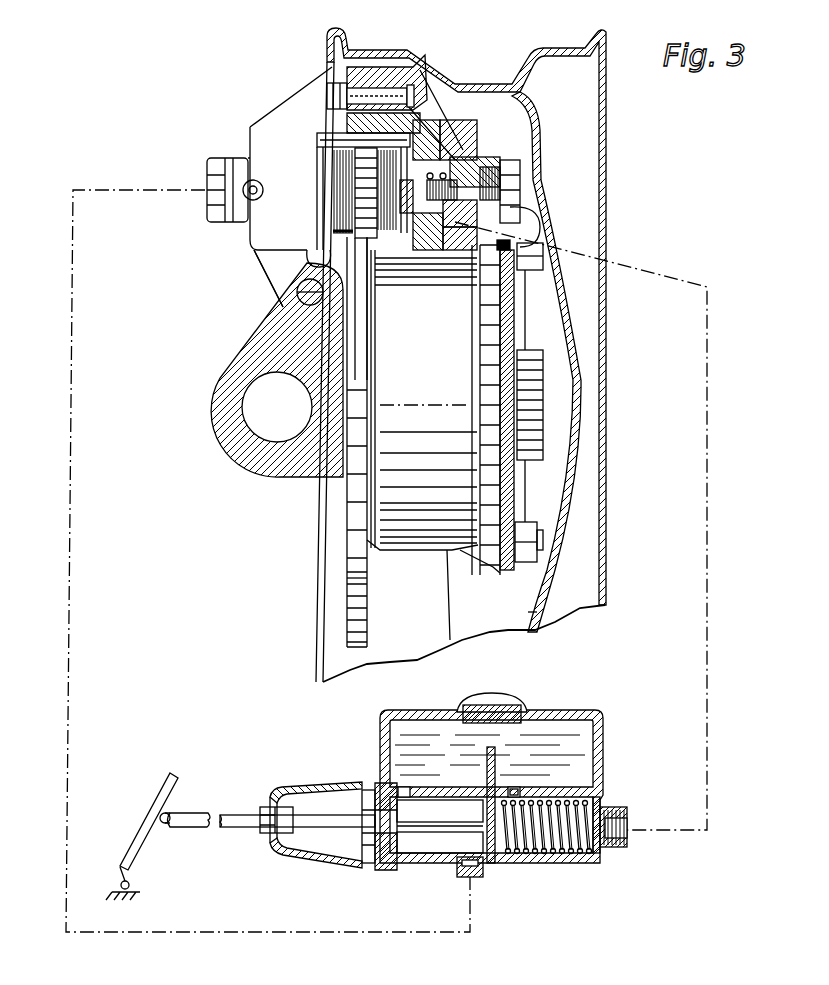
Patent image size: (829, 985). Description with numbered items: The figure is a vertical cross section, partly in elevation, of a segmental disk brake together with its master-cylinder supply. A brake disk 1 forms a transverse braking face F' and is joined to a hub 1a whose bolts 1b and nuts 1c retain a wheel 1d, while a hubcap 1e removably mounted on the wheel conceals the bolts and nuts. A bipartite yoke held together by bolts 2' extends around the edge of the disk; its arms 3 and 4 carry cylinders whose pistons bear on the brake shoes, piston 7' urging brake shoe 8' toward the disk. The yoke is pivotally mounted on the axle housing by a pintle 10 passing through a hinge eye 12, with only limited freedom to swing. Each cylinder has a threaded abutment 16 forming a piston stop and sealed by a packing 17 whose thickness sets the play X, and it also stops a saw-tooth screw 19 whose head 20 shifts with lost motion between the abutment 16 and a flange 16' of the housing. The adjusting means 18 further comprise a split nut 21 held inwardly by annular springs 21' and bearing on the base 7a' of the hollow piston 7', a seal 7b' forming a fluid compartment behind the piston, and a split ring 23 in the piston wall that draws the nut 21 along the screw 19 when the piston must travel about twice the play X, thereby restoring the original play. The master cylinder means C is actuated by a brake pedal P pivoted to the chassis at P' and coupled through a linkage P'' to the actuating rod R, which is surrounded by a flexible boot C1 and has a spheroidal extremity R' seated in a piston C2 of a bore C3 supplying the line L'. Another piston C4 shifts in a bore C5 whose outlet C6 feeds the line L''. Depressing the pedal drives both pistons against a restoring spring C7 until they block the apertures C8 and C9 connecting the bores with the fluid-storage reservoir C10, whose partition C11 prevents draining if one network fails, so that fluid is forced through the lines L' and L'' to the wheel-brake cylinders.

The brake disk 1 is at (349, 530).
The hub 1a is at (447, 547).
The bolts 1b is at (540, 550).
The nuts 1c is at (523, 530).
The wheel 1d is at (533, 613).
The hubcap 1e is at (573, 437).
The bolts 2' is at (370, 61).
The arm of the yoke 3 is at (418, 98).
The arm of the yoke 4 is at (305, 98).
The piston 7' is at (443, 294).
The base of the hollow piston 7a' is at (335, 264).
The seal 7b' is at (415, 247).
The brake shoe 8' is at (335, 275).
The pintle 10 is at (313, 327).
The hinge eye 12 is at (290, 277).
The threaded abutment 16 is at (542, 179).
The flange of the housing 16' is at (455, 250).
The packing 17 is at (517, 220).
The adjusting means 18 is at (467, 167).
The screw 19 is at (427, 257).
The head of the screw 20 is at (470, 193).
The split nut 21 is at (337, 188).
The annular springs 21' is at (438, 114).
The split ring 23 is at (465, 160).
The play X is at (487, 315).
The braking face F' is at (377, 607).
The line L' is at (604, 526).
The line L'' is at (268, 561).
The brake pedal P is at (149, 799).
The pivot P' is at (135, 883).
The linkage P'' is at (198, 842).
The actuating rod R is at (297, 829).
The spheroidal extremity R' is at (368, 803).
The master cylinder means C is at (603, 714).
The flexible boot C1 is at (307, 787).
The piston C2 is at (390, 857).
The master cylinder bore C3 is at (433, 853).
The piston C4 is at (497, 863).
The bore C5 is at (550, 863).
The outlet C6 is at (627, 830).
The restoring spring C7 is at (593, 863).
The aperture C8 is at (400, 793).
The aperture C9 is at (517, 790).
The fluid-storage reservoir C10 is at (387, 723).
The partition C11 is at (487, 750).